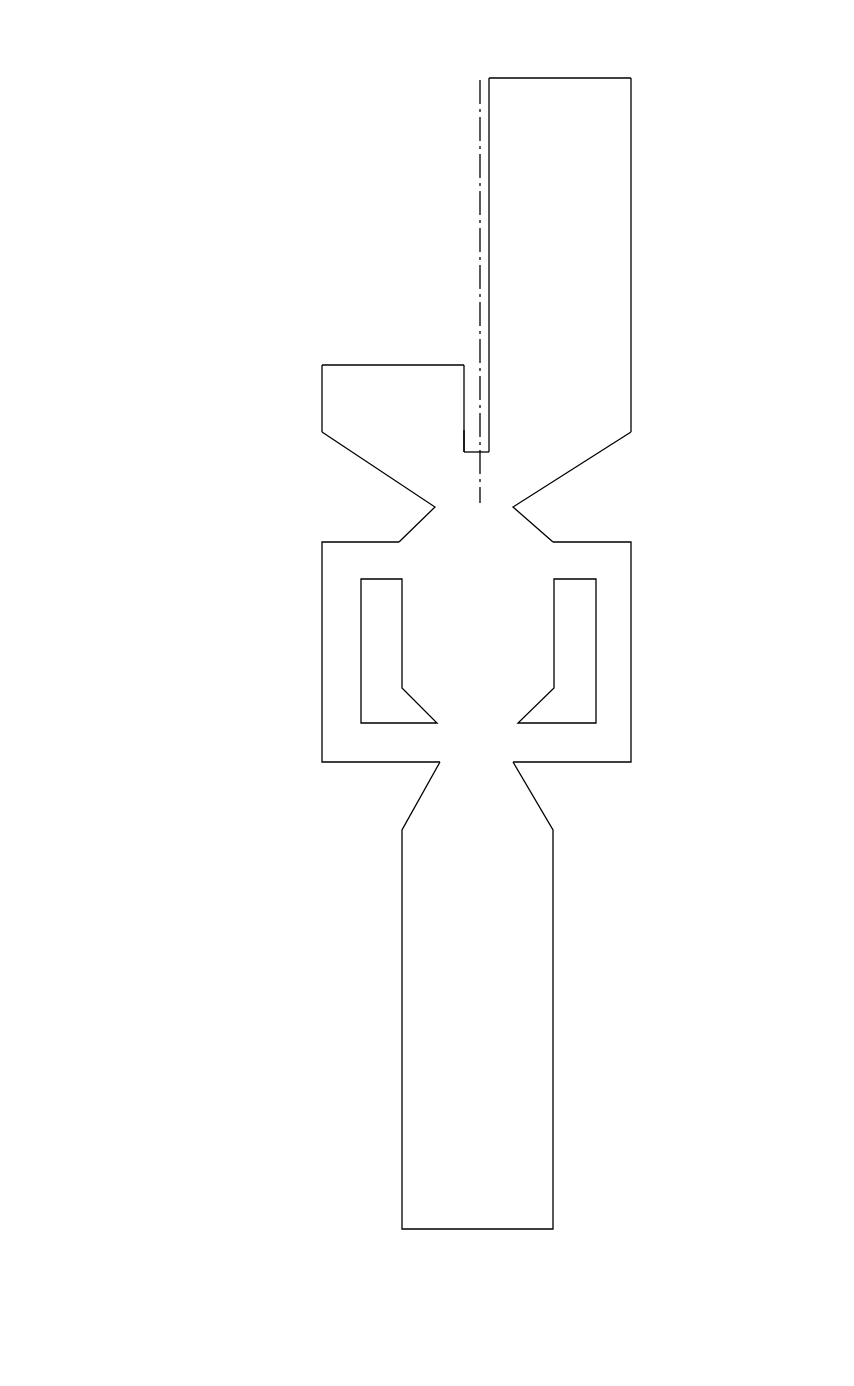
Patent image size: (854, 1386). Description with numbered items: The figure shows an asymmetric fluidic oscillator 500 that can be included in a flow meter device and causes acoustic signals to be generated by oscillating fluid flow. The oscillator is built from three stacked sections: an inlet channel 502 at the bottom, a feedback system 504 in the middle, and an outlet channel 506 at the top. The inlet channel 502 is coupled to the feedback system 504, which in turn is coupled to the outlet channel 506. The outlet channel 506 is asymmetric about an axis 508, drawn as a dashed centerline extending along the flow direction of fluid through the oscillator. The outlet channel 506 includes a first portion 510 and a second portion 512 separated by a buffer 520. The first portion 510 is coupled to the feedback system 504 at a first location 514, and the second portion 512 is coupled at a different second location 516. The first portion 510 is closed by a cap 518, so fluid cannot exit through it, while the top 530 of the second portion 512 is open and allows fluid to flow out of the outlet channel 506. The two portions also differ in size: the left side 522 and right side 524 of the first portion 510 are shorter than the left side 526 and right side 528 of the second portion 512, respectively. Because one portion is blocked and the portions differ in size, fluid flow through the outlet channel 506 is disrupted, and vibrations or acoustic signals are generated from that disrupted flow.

The asymmetric fluidic oscillator 500 is at (126, 94).
The inlet channel 502 is at (418, 1161).
The feedback system 504 is at (227, 584).
The outlet channel 506 is at (214, 297).
The axis 508 is at (478, 172).
The first portion 510 is at (390, 400).
The second portion 512 is at (557, 214).
The first location 514 is at (428, 503).
The second location 516 is at (520, 503).
The cap 518 is at (385, 365).
The buffer 520 is at (463, 440).
The left side of the first portion 522 is at (320, 420).
The right side of the first portion 524 is at (463, 405).
The left side of the second portion 526 is at (502, 363).
The right side of the second portion 528 is at (631, 342).
The top of the second portion 530 is at (566, 78).